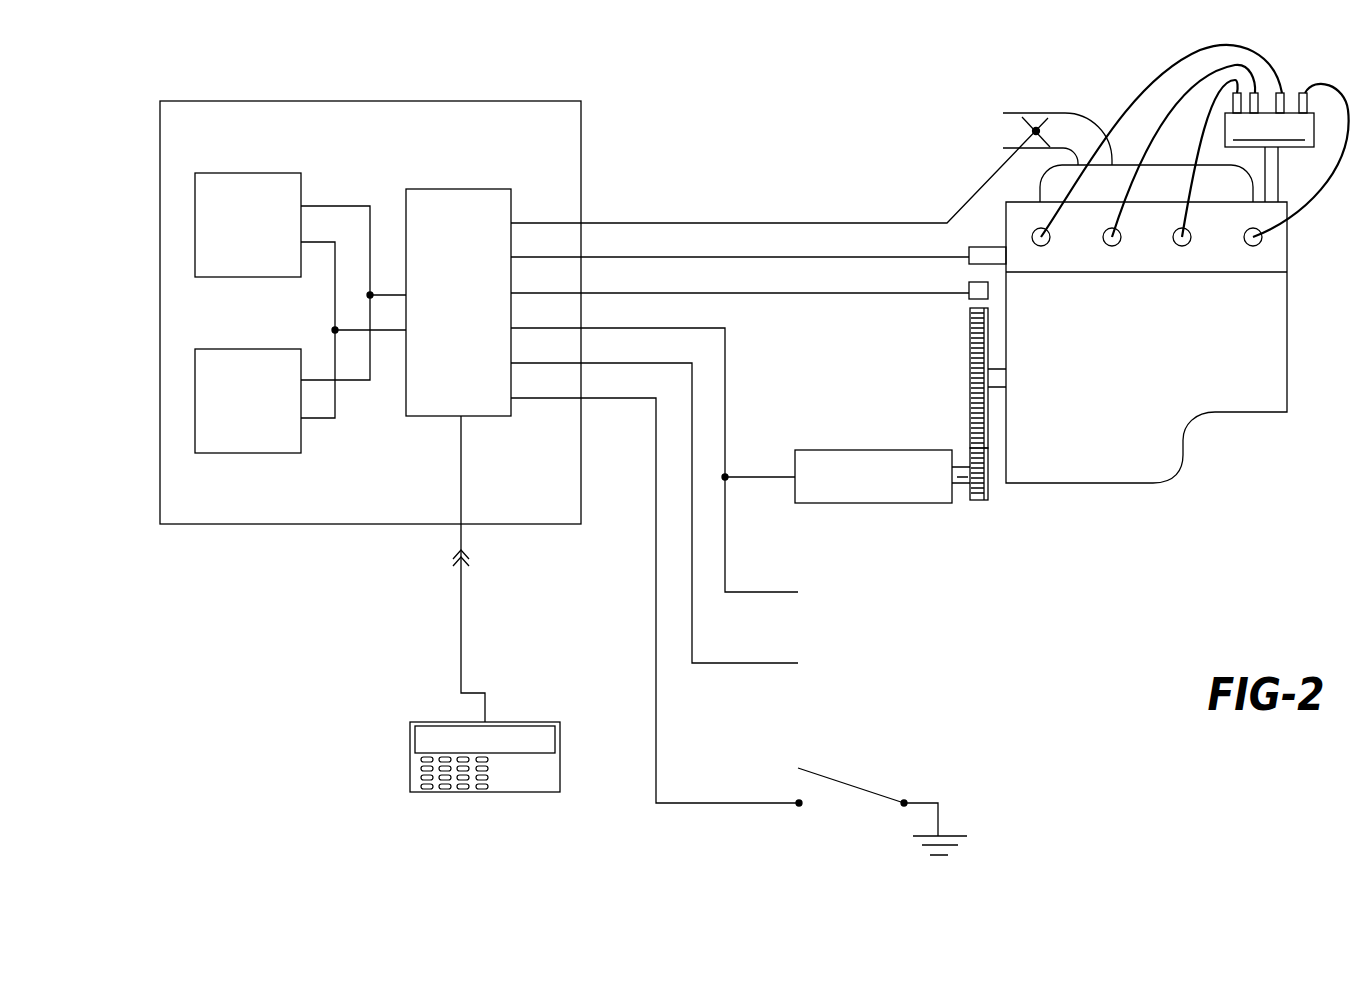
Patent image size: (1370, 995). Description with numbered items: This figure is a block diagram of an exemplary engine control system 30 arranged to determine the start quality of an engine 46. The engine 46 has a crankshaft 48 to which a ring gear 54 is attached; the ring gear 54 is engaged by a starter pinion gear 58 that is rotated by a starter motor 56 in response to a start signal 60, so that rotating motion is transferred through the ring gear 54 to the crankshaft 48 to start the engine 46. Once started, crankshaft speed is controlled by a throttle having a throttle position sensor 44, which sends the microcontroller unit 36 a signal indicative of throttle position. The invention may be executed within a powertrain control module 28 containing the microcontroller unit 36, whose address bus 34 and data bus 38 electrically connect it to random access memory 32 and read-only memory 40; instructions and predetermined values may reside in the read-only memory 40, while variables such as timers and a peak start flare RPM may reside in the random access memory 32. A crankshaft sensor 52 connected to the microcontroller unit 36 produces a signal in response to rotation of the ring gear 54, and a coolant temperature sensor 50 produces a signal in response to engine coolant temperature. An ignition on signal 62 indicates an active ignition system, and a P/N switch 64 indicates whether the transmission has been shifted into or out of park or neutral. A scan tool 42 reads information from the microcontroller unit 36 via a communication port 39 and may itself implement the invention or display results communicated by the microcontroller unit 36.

The powertrain control module 28 is at (370, 101).
The engine control system 30 is at (835, 30).
The random access memory 32 is at (218, 173).
The address bus 34 is at (359, 206).
The microcontroller unit 36 is at (457, 189).
The data bus 38 is at (357, 381).
The communication port 39 is at (464, 534).
The read-only memory 40 is at (216, 453).
The scan tool 42 is at (410, 757).
The throttle position sensor 44 is at (1036, 131).
The engine 46 is at (1287, 352).
The crankshaft 48 is at (995, 381).
The coolant temperature sensor 50 is at (968, 249).
The crankshaft sensor 52 is at (967, 298).
The ring gear 54 is at (970, 371).
The starter motor 56 is at (875, 450).
The starter pinion gear 58 is at (978, 500).
The start signal 60 is at (900, 576).
The ignition on signal 62 is at (927, 648).
The P/N switch 64 is at (847, 780).